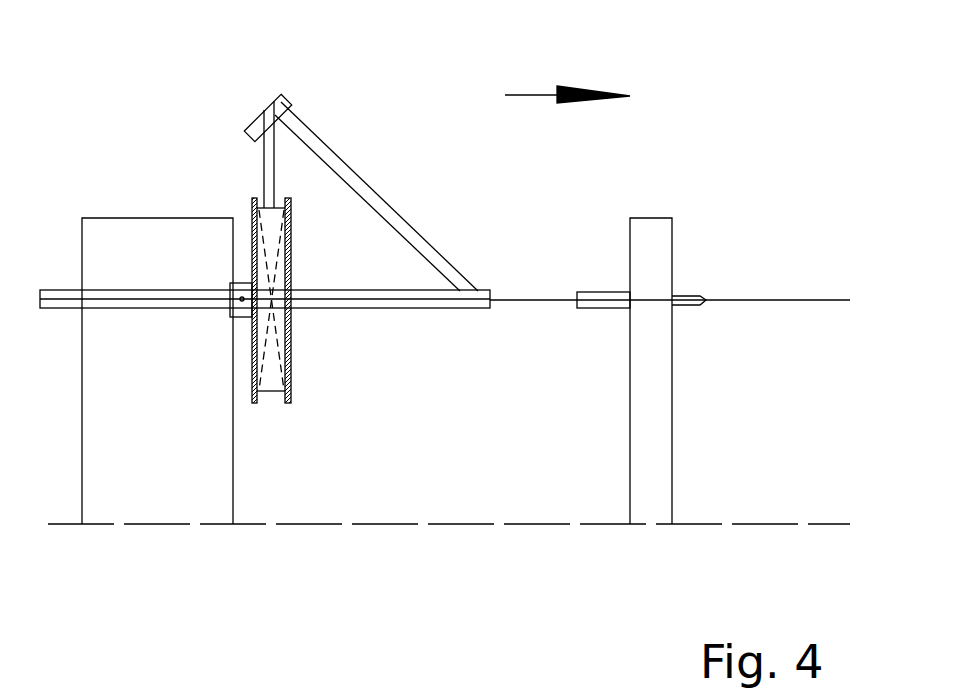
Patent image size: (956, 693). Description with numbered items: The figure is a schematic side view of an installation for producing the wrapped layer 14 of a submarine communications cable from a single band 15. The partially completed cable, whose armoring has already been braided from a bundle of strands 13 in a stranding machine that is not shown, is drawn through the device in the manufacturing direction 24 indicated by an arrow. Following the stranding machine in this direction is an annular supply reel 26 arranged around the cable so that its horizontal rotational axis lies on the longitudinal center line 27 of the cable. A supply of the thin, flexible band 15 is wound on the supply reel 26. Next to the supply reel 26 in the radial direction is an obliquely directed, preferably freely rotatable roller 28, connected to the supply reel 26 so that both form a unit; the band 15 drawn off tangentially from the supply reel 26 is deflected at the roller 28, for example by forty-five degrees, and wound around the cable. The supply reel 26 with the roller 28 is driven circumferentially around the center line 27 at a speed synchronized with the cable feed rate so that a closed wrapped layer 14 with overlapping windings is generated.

The strands 13 is at (350, 309).
The wrapped layer 14 is at (602, 303).
The band 15 is at (276, 177).
The manufacturing direction 24 is at (530, 93).
The supply reel 26 is at (289, 384).
The longitudinal center line 27 is at (717, 300).
The roller 28 is at (252, 127).